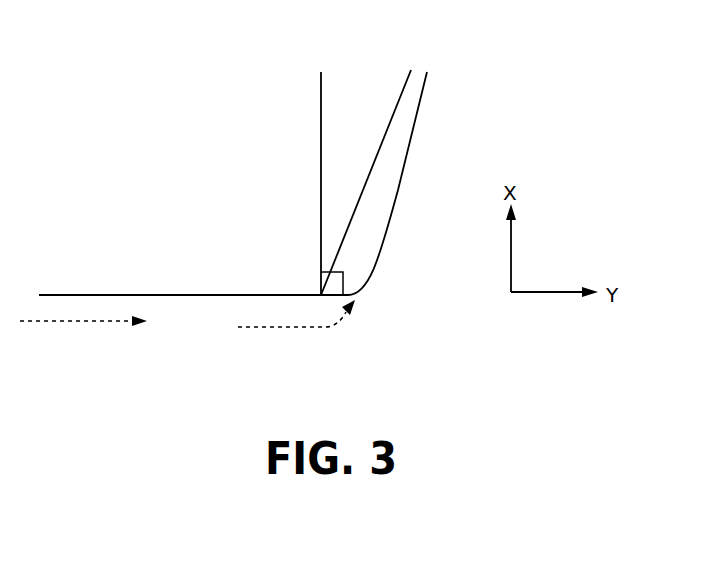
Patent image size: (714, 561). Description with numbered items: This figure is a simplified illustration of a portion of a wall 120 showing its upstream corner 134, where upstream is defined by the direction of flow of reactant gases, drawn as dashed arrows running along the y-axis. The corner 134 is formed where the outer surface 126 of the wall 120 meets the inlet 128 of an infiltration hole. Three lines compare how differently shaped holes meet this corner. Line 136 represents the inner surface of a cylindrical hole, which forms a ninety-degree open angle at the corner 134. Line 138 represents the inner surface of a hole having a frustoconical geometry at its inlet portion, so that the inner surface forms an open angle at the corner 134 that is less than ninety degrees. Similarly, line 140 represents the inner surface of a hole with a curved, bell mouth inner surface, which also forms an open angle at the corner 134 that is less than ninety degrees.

The wall 120 is at (168, 220).
The outer surface 126 is at (169, 318).
The inlet 128 is at (376, 293).
The upstream corner 134 is at (321, 295).
The line representing inner surface of cylindrical hole 136 is at (321, 133).
The line representing inner surface of frustoconical hole 138 is at (379, 148).
The line representing inner surface of bell mouth hole 140 is at (399, 182).